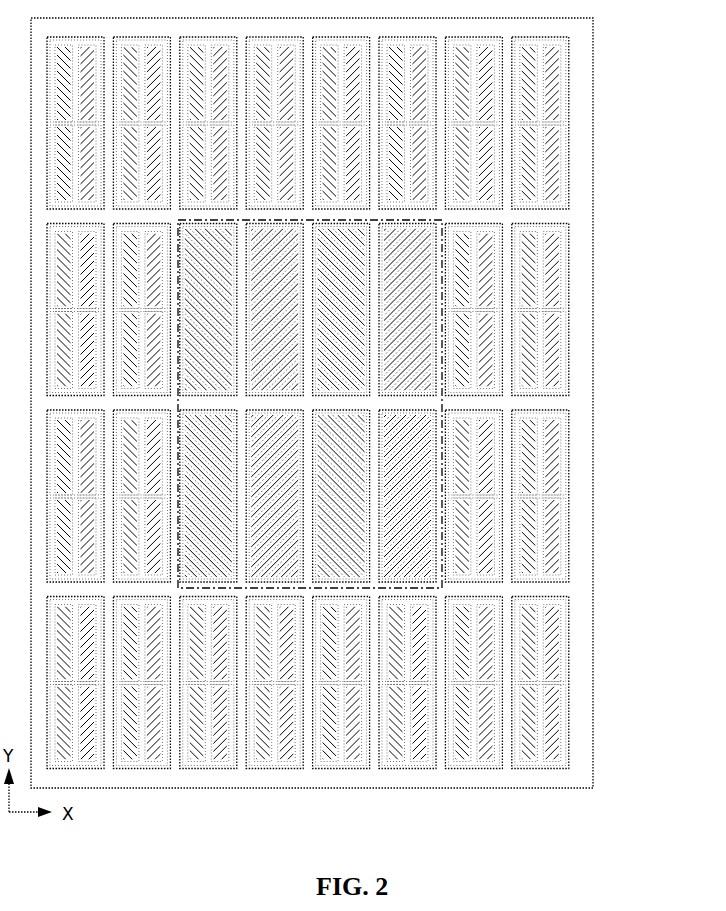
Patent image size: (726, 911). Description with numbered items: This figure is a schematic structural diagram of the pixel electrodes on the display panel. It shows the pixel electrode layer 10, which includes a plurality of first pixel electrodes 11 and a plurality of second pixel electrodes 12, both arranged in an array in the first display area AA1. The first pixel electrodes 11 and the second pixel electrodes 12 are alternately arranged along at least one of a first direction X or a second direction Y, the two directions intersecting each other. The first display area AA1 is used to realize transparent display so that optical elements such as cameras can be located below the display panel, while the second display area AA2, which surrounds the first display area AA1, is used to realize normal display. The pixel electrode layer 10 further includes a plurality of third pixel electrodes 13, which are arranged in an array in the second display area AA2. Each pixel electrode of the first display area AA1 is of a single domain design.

The pixel electrode layer 10 is at (354, 403).
The first pixel electrodes 11 is at (430, 442).
The second pixel electrodes 12 is at (365, 497).
The third pixel electrodes 13 is at (548, 392).
The first display area AA1 is at (445, 221).
The second display area AA2 is at (583, 63).